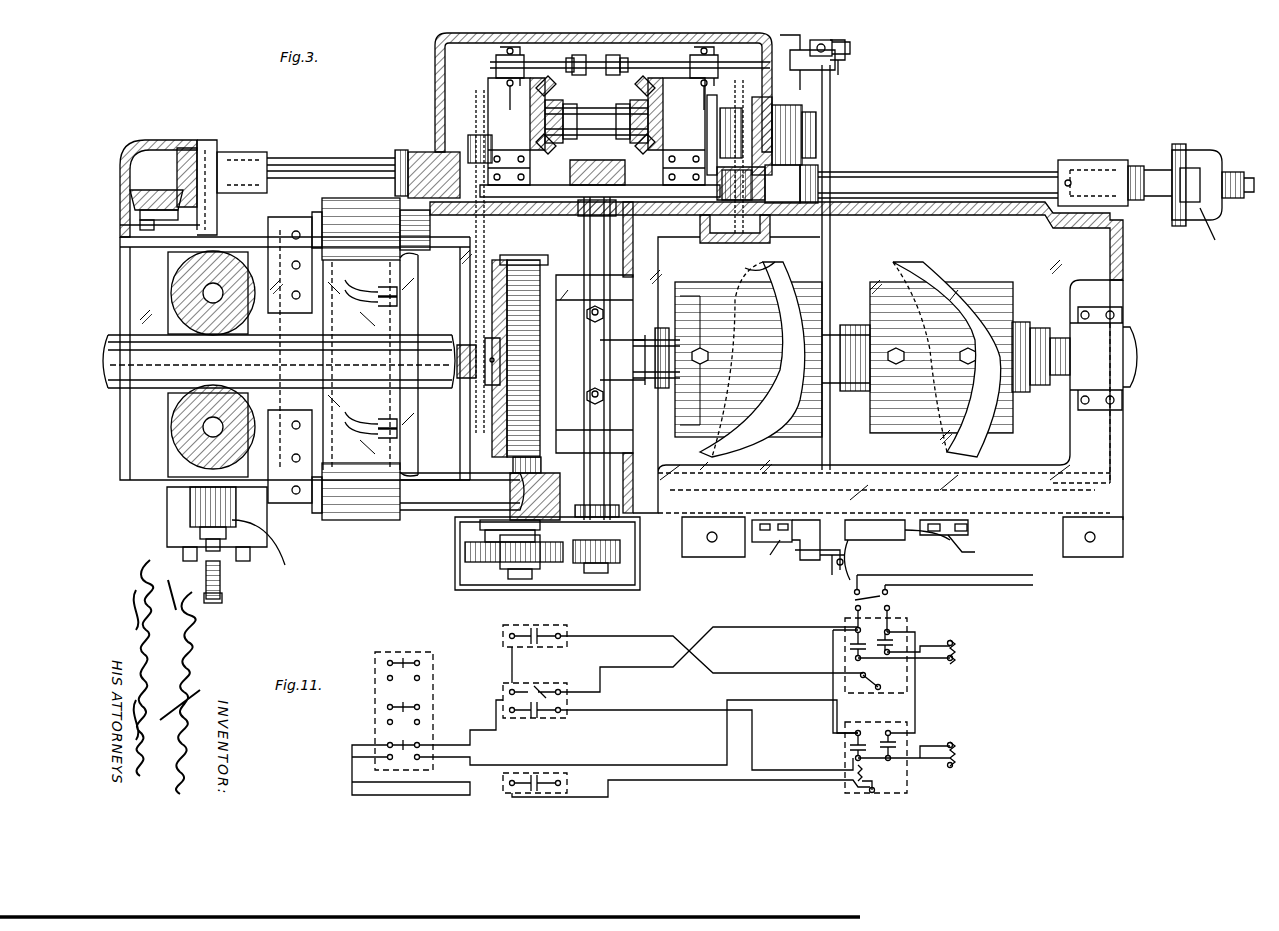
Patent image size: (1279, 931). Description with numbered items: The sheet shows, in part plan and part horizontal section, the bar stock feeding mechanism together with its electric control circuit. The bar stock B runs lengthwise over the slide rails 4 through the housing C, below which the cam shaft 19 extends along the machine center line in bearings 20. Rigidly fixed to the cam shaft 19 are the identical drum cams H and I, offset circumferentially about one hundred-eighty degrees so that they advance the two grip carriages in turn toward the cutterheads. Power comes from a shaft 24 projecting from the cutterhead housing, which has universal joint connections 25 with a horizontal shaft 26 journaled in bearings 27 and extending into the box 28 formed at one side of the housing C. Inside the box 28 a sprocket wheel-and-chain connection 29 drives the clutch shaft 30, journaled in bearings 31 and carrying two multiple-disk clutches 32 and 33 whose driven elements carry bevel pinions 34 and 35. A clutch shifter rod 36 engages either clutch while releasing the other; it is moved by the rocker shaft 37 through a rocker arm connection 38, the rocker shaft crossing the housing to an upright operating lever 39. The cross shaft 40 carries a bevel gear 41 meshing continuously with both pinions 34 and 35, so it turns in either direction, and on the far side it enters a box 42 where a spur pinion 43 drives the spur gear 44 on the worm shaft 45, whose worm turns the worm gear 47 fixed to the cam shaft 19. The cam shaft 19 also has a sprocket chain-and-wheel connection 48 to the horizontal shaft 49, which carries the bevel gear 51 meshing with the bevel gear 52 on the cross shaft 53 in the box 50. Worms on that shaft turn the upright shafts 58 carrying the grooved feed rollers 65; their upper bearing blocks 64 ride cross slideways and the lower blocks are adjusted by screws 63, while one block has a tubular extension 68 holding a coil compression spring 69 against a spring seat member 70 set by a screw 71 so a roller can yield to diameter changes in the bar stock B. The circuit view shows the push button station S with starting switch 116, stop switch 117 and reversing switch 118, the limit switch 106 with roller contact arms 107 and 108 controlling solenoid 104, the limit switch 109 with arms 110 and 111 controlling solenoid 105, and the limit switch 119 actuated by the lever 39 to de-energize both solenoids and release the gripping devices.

In FIG. 3, the slide rails 4 is at (420, 240).
In FIG. 3, the cam shaft 19 is at (645, 336).
In FIG. 3, the bearings 20 is at (615, 378).
In FIG. 3, the shaft 24 is at (1246, 180).
In FIG. 3, the universal joint connections 25 is at (1214, 233).
In FIG. 3, the horizontal shaft 26 is at (985, 172).
In FIG. 3, the bearings 27 is at (805, 162).
In FIG. 3, the box 28 is at (706, 40).
In FIG. 3, the sprocket wheel-and-chain driving connection 29 is at (745, 205).
In FIG. 3, the clutch shaft 30 is at (590, 108).
In FIG. 3, the bearings 31 is at (800, 118).
In FIG. 3, the clutch 32 is at (476, 112).
In FIG. 3, the clutch 33 is at (716, 95).
In FIG. 3, the bevel pinion 34 is at (560, 56).
In FIG. 3, the bevel pinion 35 is at (640, 56).
In FIG. 3, the clutch shifter rod 36 is at (570, 60).
In FIG. 3, the rocker shaft 37 is at (834, 92).
In FIG. 3, the rocker arm connection 38 is at (838, 45).
In FIG. 3, the operating lever 39 is at (832, 566).
In FIG. 3, the cross shaft 40 is at (612, 252).
In FIG. 3, the bevel gear 41 is at (572, 178).
In FIG. 3, the box 42 is at (640, 560).
In FIG. 3, the spur pinion 43 is at (620, 552).
In FIG. 3, the spur gear 44 is at (465, 552).
In FIG. 3, the worm shaft 45 is at (542, 466).
In FIG. 3, the worm gear 47 is at (507, 440).
In FIG. 3, the sprocket chain-and-wheel connection 48 is at (480, 312).
In FIG. 3, the horizontal shaft 49 is at (362, 158).
In FIG. 3, the box 50 is at (148, 142).
In FIG. 3, the bevel gear 51 is at (205, 140).
In FIG. 3, the bevel gear 52 is at (170, 192).
In FIG. 3, the cross shaft 53 is at (152, 232).
In FIG. 3, the upright shafts 58 is at (205, 298).
In FIG. 3, the screw 63 is at (183, 553).
In FIG. 3, the bearing block 64 is at (170, 272).
In FIG. 3, the feed roller 65 is at (190, 292).
In FIG. 3, the tubular extension 68 is at (200, 520).
In FIG. 3, the coil compression spring 69 is at (190, 497).
In FIG. 3, the spring seat member 70 is at (268, 550).
In FIG. 3, the screw 71 is at (206, 578).
In FIG. 11, the solenoid 104 is at (960, 643).
In FIG. 11, the solenoid 105 is at (962, 752).
In FIG. 3, the limit switch 106 is at (775, 543).
In FIG. 11, the limit switch 106 is at (567, 630).
In FIG. 3, the roller contact arm 107 is at (768, 518).
In FIG. 3, the roller contact arm 108 is at (790, 552).
In FIG. 3, the limit switch 109 is at (973, 546).
In FIG. 11, the limit switch 109 is at (570, 775).
In FIG. 3, the roller contact arm 110 is at (935, 518).
In FIG. 3, the roller contact arm 111 is at (962, 520).
In FIG. 11, the starting switch 116 is at (432, 666).
In FIG. 11, the stop switch 117 is at (432, 712).
In FIG. 11, the reversing switch 118 is at (388, 760).
In FIG. 3, the limit switch 119 is at (893, 542).
In FIG. 11, the limit switch 119 is at (570, 696).
In FIG. 3, the bar stock B is at (428, 340).
In FIG. 3, the housing C is at (1124, 262).
In FIG. 3, the drum cam H is at (790, 300).
In FIG. 3, the drum cam I is at (938, 270).
In FIG. 11, the push button station S is at (409, 641).